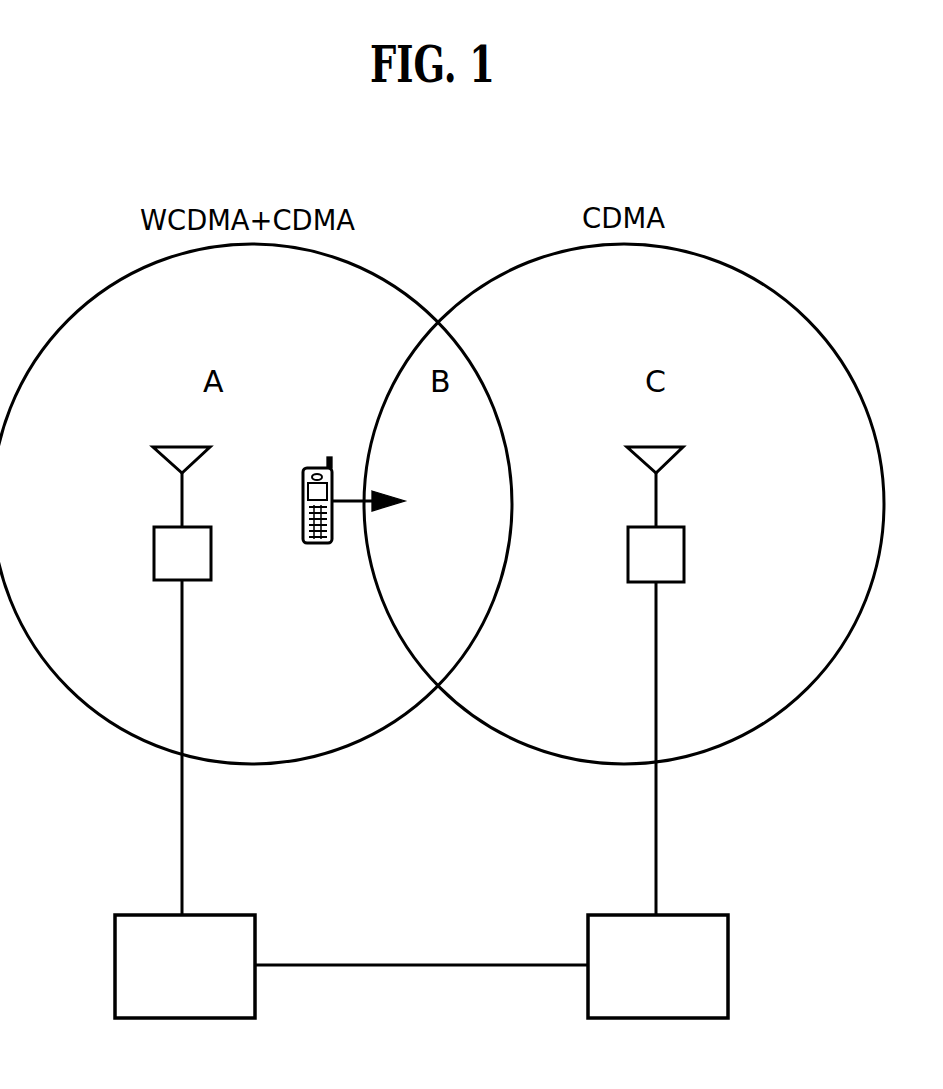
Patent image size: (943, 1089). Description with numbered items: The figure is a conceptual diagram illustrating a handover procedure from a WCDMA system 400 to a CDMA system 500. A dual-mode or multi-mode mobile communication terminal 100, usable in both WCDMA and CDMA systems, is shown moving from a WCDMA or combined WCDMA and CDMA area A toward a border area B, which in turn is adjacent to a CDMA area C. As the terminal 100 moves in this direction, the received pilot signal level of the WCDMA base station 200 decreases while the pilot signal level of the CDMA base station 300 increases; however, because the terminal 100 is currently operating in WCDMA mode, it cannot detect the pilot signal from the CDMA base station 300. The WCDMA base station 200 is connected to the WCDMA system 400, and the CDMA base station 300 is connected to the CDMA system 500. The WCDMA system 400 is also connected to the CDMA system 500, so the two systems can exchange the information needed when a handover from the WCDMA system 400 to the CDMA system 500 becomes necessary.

The mobile communication terminal 100 is at (318, 543).
The WCDMA base station 200 is at (204, 582).
The CDMA base station 300 is at (686, 555).
The WCDMA system 400 is at (235, 915).
The CDMA system 500 is at (690, 915).